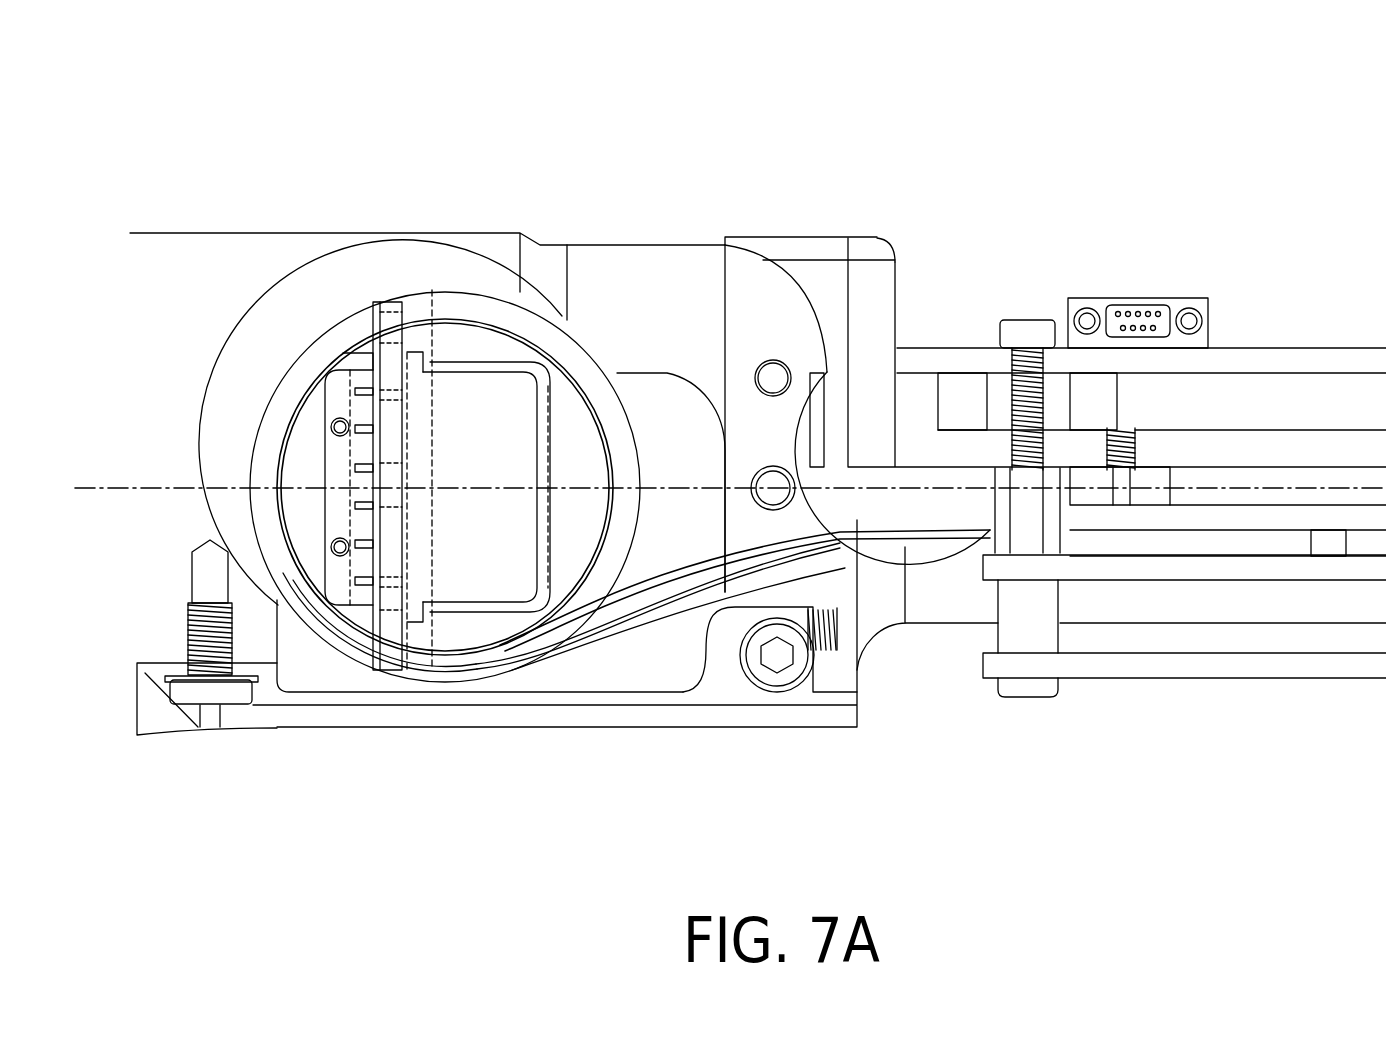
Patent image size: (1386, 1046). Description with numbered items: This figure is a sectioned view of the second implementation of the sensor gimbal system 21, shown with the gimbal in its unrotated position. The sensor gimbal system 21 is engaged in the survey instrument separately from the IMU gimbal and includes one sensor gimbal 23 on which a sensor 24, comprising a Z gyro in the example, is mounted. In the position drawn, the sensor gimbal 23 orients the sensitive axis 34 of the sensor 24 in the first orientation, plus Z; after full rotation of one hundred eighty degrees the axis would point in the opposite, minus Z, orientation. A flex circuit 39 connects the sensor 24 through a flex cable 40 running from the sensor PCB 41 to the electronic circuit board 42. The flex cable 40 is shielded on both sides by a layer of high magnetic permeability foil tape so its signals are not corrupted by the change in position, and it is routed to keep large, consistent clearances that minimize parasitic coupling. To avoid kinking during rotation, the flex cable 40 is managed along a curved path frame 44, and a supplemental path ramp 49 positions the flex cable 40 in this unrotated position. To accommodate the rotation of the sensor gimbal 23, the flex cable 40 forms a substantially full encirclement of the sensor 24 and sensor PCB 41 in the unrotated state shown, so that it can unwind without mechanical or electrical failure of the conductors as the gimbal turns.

The sensor gimbal system 21 is at (662, 214).
The sensor gimbal 23 is at (490, 243).
The flex cable 40 is at (693, 567).
The curved path frame 44 is at (883, 500).
The electronic circuit board 42 is at (1187, 543).
The sensitive axis 34 is at (153, 487).
The sensor PCB 41 is at (392, 487).
The sensor 24 is at (477, 530).
The supplemental path ramp 49 is at (658, 655).
The flex circuit 39 is at (840, 558).